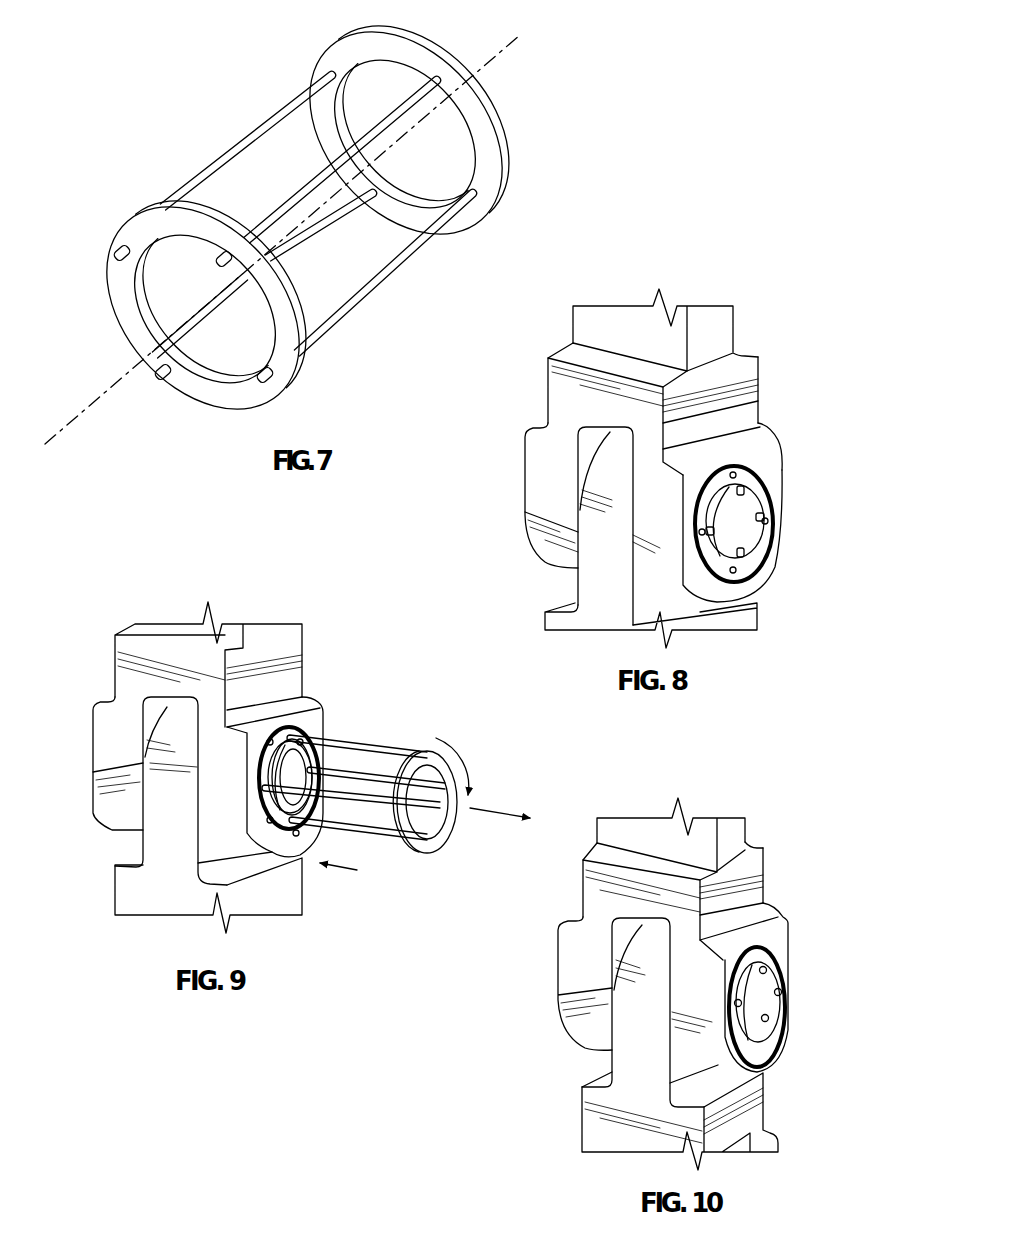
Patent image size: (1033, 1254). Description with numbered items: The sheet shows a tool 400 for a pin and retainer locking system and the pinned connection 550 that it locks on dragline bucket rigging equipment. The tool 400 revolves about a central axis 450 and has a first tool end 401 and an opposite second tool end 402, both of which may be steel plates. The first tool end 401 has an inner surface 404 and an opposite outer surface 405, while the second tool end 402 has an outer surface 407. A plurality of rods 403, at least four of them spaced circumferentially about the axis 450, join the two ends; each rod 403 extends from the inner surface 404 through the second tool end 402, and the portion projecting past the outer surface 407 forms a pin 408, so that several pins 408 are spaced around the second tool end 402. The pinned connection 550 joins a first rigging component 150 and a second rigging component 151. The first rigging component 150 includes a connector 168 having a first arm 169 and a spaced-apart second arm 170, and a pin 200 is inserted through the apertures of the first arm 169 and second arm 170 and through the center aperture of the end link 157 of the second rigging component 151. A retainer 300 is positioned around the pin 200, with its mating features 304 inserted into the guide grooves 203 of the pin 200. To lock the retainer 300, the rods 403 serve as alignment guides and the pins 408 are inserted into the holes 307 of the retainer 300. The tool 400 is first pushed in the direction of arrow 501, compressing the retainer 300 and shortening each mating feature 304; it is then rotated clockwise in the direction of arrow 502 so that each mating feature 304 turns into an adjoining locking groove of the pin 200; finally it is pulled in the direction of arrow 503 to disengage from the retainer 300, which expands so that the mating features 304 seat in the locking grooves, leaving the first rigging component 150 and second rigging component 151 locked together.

In FIG. 8, the first rigging component 150 is at (583, 331).
In FIG. 9, the first rigging component 150 is at (115, 652).
In FIG. 10, the first rigging component 150 is at (587, 875).
In FIG. 8, the second rigging component 151 is at (543, 615).
In FIG. 9, the second rigging component 151 is at (122, 903).
In FIG. 10, the second rigging component 151 is at (587, 1127).
In FIG. 8, the end link 157 is at (576, 582).
In FIG. 8, the connector 168 is at (778, 409).
In FIG. 8, the first arm 169 is at (775, 457).
In FIG. 8, the second arm 170 is at (542, 543).
In FIG. 8, the pin 200 is at (733, 523).
In FIG. 9, the pin 200 is at (300, 758).
In FIG. 10, the pin 200 is at (780, 1013).
In FIG. 8, the guide grooves 203 is at (764, 518).
In FIG. 8, the retainer 300 is at (760, 486).
In FIG. 9, the retainer 300 is at (292, 722).
In FIG. 10, the retainer 300 is at (763, 957).
In FIG. 8, the mating features 304 is at (702, 532).
In FIG. 9, the holes 307 is at (283, 737).
In FIG. 7, the tool 400 is at (308, 223).
In FIG. 9, the tool 400 is at (383, 813).
In FIG. 7, the first tool end 401 is at (395, 44).
In FIG. 7, the second tool end 402 is at (120, 296).
In FIG. 7, the rods 403 is at (298, 200).
In FIG. 9, the rods 403 is at (372, 810).
In FIG. 7, the inner surface 404 is at (458, 105).
In FIG. 7, the outer surface 405 is at (498, 152).
In FIG. 7, the outer surface 407 is at (148, 235).
In FIG. 7, the pins 408 is at (221, 259).
In FIG. 7, the axis 450 is at (122, 380).
In FIG. 9, the arrow 501 is at (340, 870).
In FIG. 9, the arrow 502 is at (470, 755).
In FIG. 9, the arrow 503 is at (497, 800).
In FIG. 8, the pinned connection 550 is at (790, 532).
In FIG. 9, the pinned connection 550 is at (330, 721).
In FIG. 10, the pinned connection 550 is at (792, 972).